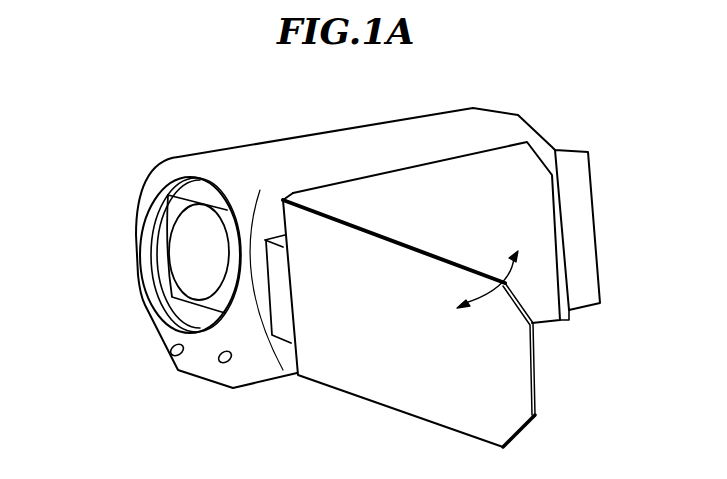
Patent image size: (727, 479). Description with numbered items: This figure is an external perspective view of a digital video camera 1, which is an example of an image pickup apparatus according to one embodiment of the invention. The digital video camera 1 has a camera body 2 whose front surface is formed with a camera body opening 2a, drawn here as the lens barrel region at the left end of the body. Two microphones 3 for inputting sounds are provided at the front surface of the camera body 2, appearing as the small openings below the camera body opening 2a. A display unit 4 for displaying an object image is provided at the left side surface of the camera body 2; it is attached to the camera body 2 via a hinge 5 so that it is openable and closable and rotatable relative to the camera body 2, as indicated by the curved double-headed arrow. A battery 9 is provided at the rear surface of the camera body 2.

The digital video camera 1 is at (262, 130).
The camera body 2 is at (375, 131).
The camera body opening 2a is at (170, 247).
The microphones 3 is at (171, 358).
The display unit 4 is at (397, 401).
The hinge 5 is at (285, 330).
The battery 9 is at (570, 165).